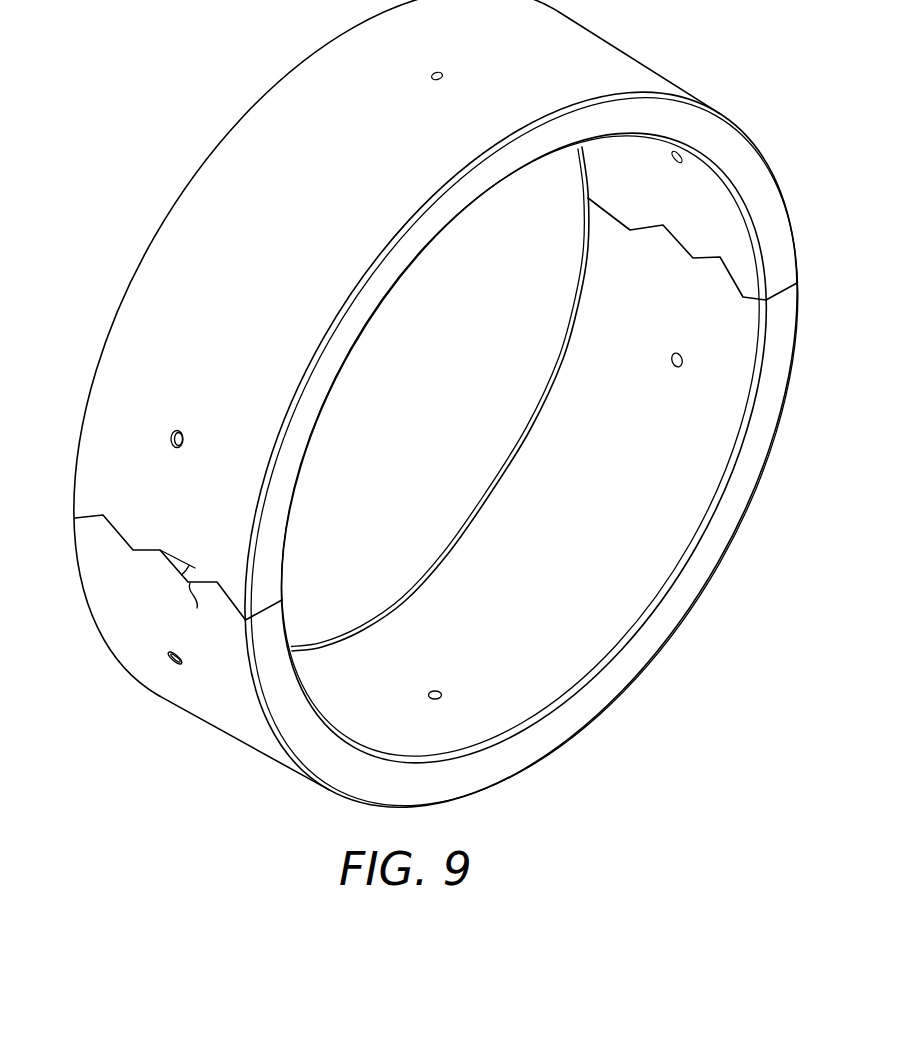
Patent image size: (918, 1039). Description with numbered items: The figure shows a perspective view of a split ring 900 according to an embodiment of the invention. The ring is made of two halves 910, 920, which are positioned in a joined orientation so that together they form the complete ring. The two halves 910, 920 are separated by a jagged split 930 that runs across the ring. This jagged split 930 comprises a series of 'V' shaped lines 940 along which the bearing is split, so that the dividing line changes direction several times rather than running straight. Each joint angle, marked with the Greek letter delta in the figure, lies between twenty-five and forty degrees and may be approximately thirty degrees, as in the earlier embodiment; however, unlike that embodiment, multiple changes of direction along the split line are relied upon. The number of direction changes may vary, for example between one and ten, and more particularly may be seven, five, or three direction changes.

The split ring 900 is at (714, 578).
The half 910 is at (560, 732).
The half 920 is at (227, 150).
The jagged split 930 is at (82, 516).
The 'V' shaped lines 940 is at (613, 227).